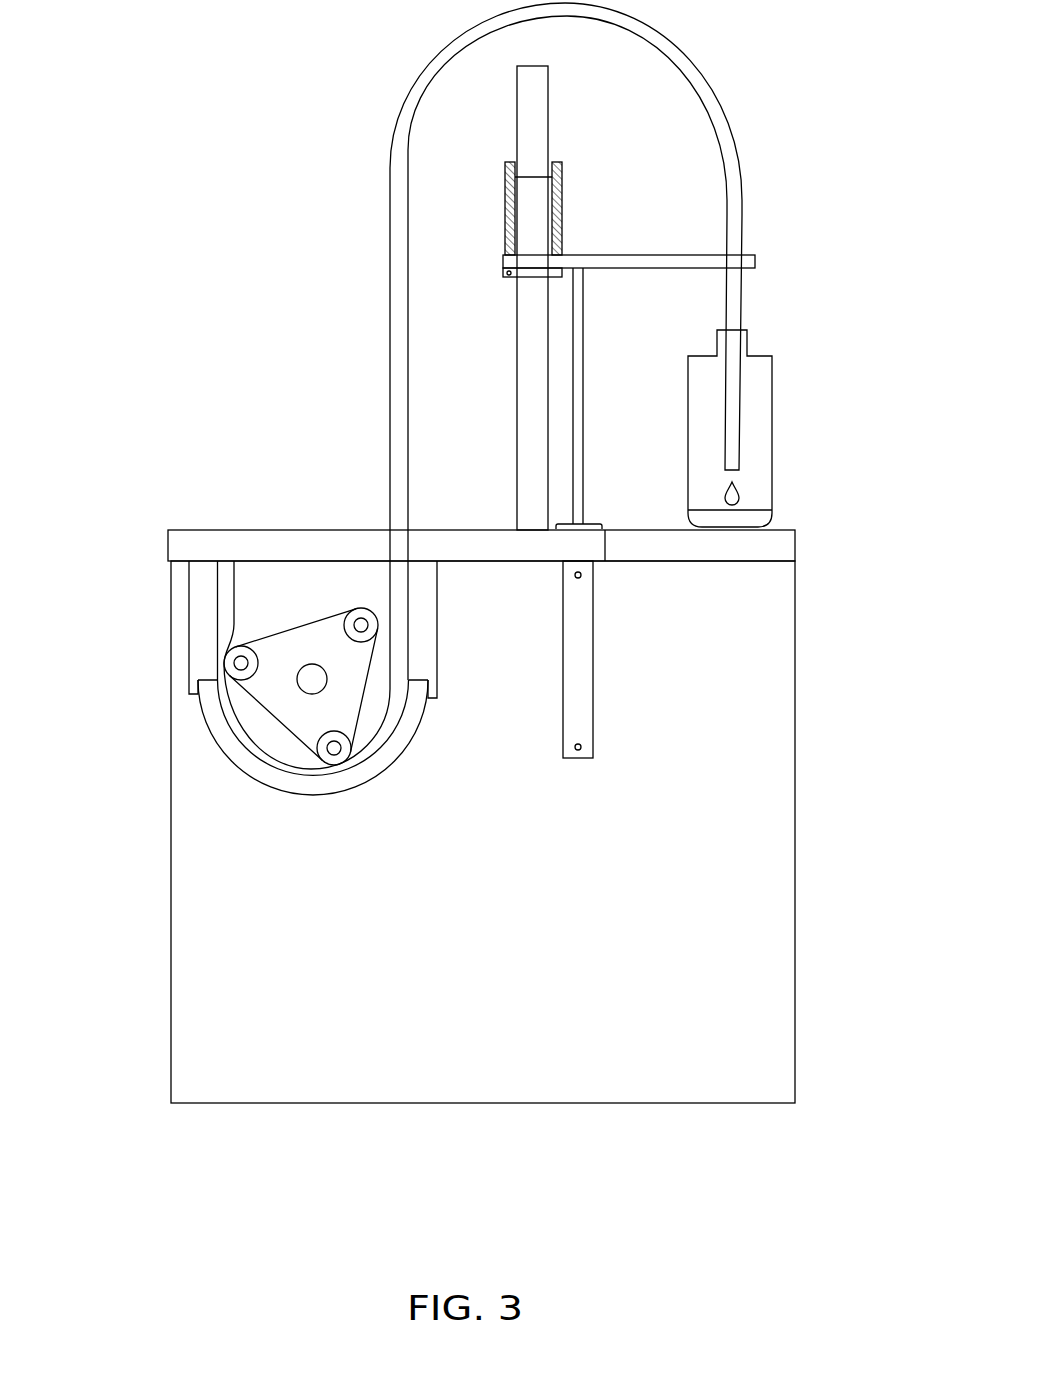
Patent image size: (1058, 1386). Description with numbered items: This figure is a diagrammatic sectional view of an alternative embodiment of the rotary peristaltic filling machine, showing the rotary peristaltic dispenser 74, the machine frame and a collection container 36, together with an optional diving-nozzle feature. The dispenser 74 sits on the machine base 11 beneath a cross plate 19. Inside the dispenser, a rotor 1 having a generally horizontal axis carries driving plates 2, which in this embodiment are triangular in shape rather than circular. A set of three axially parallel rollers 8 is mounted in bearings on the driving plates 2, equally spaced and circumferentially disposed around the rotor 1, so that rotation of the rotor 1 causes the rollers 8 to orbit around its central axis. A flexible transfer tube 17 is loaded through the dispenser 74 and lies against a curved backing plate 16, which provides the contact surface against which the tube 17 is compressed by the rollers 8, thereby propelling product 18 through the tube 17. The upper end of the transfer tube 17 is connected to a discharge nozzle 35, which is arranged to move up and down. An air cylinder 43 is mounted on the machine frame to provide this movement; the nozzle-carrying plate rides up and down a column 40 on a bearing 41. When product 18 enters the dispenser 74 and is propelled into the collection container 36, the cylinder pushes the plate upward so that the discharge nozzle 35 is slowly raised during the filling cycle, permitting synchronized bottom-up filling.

The rotor 1 is at (308, 685).
The driving plates 2 is at (348, 688).
The rollers 8 is at (334, 750).
The machine base 11 is at (313, 777).
The curved backing plate 16 is at (392, 760).
The flexible transfer tubes 17 is at (397, 341).
The product 18 is at (742, 499).
The cross plate 19 is at (202, 542).
The discharge nozzles 35 is at (737, 305).
The collection container 36 is at (748, 455).
The column 40 is at (539, 94).
The bearing 41 is at (561, 178).
The air cylinder 43 is at (580, 698).
The rotary peristaltic dispenser 74 is at (190, 752).